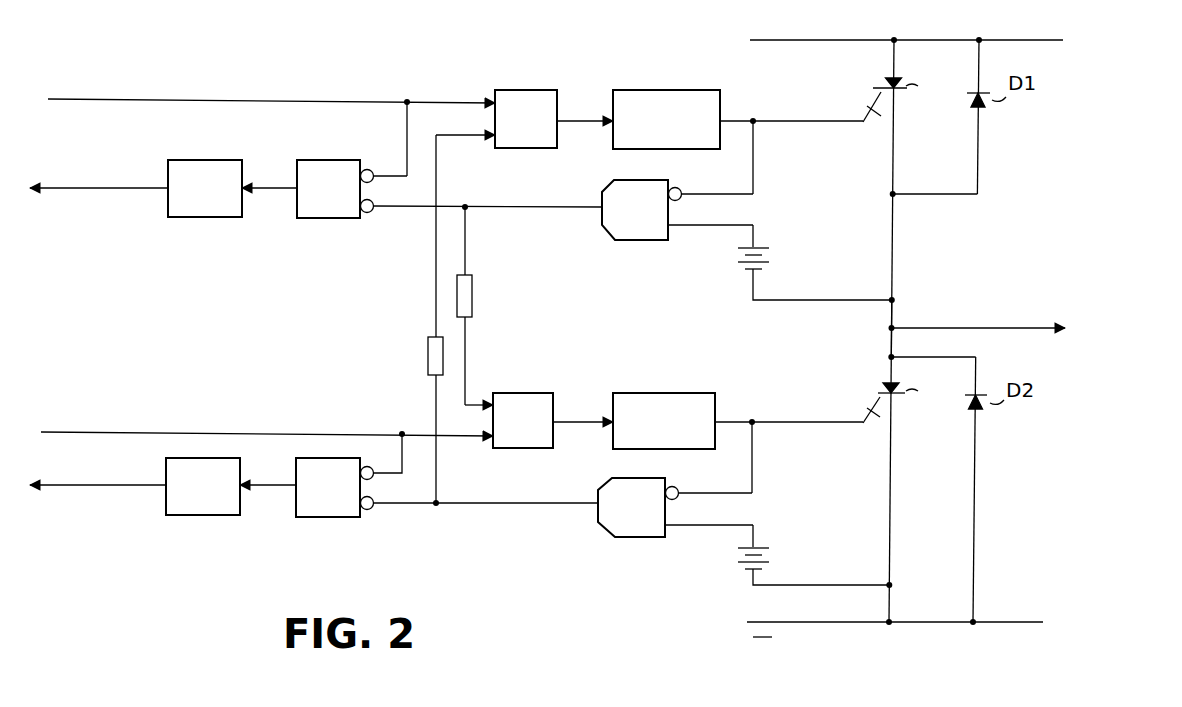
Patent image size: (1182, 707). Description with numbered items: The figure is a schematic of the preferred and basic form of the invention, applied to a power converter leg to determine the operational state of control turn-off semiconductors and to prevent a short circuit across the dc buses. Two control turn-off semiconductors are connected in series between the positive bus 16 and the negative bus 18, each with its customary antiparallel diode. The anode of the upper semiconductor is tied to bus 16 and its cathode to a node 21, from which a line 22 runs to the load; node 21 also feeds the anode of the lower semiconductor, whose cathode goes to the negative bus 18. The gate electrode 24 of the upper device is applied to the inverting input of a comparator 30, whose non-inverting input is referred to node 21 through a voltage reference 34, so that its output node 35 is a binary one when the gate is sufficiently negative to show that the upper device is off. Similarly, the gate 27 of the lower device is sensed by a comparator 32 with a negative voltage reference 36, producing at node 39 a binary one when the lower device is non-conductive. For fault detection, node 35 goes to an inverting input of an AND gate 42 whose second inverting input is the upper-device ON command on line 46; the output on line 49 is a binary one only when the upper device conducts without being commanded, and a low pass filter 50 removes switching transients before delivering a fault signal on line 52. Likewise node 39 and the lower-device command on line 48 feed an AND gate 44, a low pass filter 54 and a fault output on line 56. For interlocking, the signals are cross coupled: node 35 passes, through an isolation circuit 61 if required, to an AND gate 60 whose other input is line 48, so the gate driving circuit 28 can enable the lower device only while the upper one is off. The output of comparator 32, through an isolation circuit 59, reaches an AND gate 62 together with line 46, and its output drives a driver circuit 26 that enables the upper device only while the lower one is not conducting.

The positive bus 16 is at (819, 39).
The negative bus 18 is at (822, 622).
The node 21 is at (882, 328).
The line 22 is at (991, 328).
The gate electrode 24 is at (871, 96).
The driver circuit 26 is at (668, 89).
The gate 27 is at (869, 401).
The gate driving circuit 28 is at (662, 395).
The comparator 30 is at (624, 243).
The comparator 32 is at (624, 540).
The voltage reference 34 is at (735, 274).
The node 35 is at (468, 205).
The negative voltage reference 36 is at (734, 580).
The node 39 is at (436, 505).
The AND gate 42 is at (337, 220).
The AND gate 44 is at (335, 520).
The line 46 is at (86, 96).
The line 48 is at (86, 432).
The line 49 is at (275, 193).
The low pass filter 50 is at (222, 220).
The line 52 is at (112, 186).
The low pass filter 54 is at (212, 518).
The line 56 is at (116, 482).
The isolation circuit 59 is at (426, 348).
The AND gate 60 is at (552, 394).
The isolation circuit 61 is at (476, 311).
The AND gate 62 is at (534, 88).